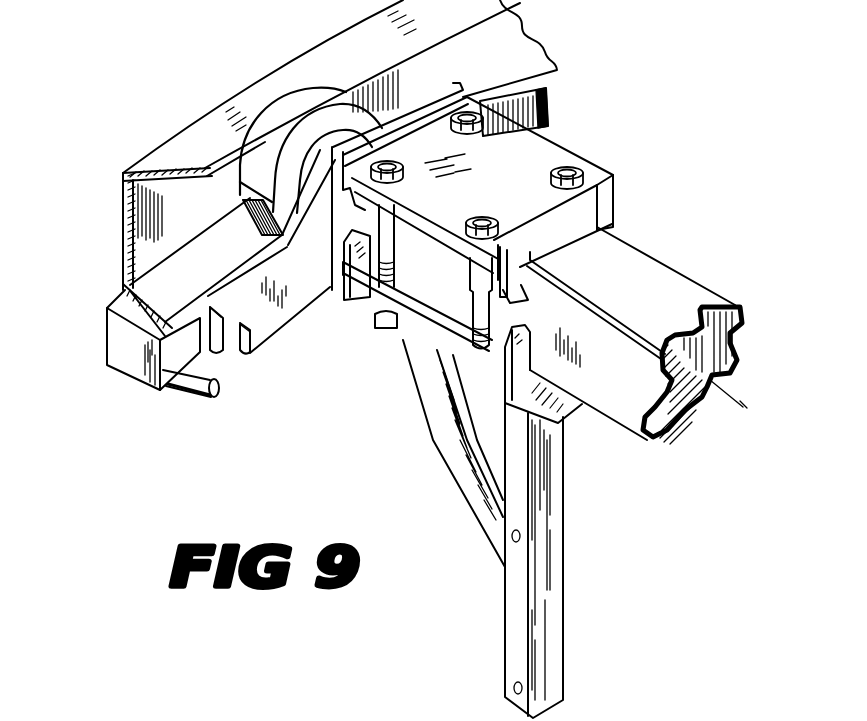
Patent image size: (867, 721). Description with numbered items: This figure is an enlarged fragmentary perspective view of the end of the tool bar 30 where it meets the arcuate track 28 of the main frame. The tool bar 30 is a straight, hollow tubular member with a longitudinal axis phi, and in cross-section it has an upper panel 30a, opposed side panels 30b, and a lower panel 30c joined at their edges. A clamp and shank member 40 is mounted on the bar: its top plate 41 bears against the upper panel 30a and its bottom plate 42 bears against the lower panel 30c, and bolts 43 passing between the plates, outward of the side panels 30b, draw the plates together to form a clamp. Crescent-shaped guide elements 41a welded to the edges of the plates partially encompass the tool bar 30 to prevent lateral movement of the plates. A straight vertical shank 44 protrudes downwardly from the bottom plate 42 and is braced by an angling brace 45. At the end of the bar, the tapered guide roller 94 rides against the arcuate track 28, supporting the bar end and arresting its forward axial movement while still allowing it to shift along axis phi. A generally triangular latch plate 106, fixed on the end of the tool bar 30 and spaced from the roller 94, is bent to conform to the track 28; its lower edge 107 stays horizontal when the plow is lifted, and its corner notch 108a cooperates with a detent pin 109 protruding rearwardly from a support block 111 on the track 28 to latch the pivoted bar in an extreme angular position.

The arcuate track 28 is at (333, 40).
The guide roller 94 is at (283, 133).
The latch plate 106 is at (263, 280).
The lower edge 107 is at (250, 353).
The corner notch 108a is at (247, 353).
The detent pin 109 is at (213, 393).
The support block 111 is at (115, 340).
The clamp and shank member 40 is at (496, 272).
The top plate 41 is at (513, 199).
The crescent-shaped guide element 41a is at (460, 84).
The bottom plate 42 is at (392, 352).
The bolt 43 is at (473, 303).
The vertical shank 44 is at (510, 638).
The angling brace 45 is at (433, 437).
The tool bar 30 is at (563, 465).
The upper panel 30a is at (700, 283).
The side panel 30b is at (587, 313).
The lower panel 30c is at (683, 420).
The longitudinal axis phi is at (740, 387).